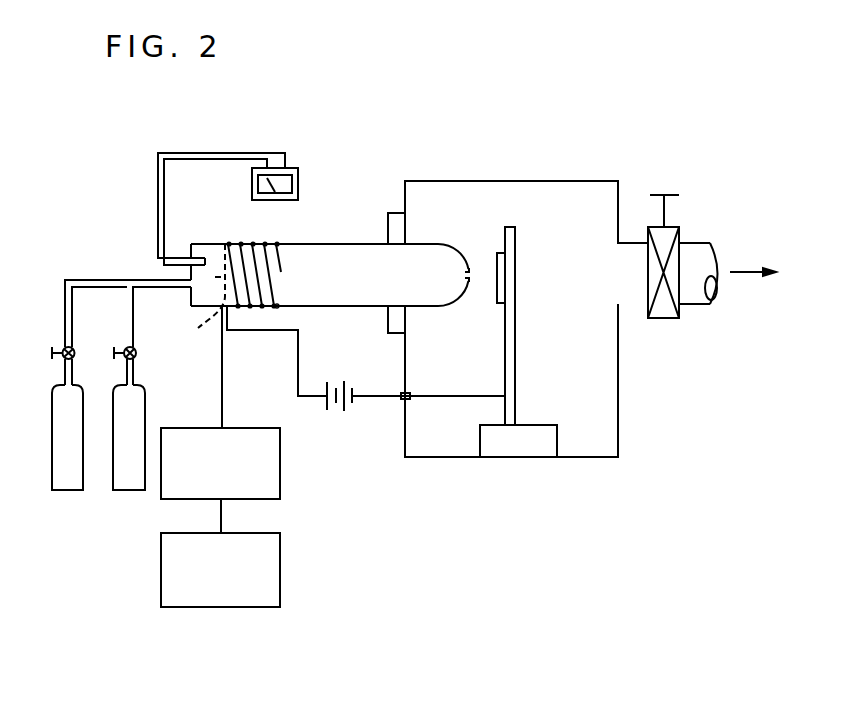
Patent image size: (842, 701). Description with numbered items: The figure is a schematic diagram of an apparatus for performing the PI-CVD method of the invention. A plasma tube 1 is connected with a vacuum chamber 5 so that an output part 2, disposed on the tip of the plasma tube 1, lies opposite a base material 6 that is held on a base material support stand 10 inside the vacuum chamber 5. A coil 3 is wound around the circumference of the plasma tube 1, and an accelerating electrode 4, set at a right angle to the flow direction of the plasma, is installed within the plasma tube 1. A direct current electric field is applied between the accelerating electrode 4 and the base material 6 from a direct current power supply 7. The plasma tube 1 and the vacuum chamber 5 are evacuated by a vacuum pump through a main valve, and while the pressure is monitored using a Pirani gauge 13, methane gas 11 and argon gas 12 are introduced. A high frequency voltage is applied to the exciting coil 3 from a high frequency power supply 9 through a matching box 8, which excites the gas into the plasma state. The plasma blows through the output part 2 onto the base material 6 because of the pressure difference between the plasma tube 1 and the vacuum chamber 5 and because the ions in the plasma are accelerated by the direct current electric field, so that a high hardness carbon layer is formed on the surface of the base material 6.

The plasma tube 1 is at (337, 297).
The output part 2 is at (468, 268).
The coil 3 is at (233, 240).
The accelerating electrode 4 is at (203, 293).
The vacuum chamber 5 is at (567, 188).
The base material 6 is at (495, 293).
The direct current power supply 7 is at (350, 412).
The matching box 8 is at (263, 430).
The high frequency power supply 9 is at (272, 534).
The base material support stand 10 is at (528, 447).
The methane gas 11 is at (68, 483).
The argon gas 12 is at (132, 483).
The Pirani gauge 13 is at (158, 213).